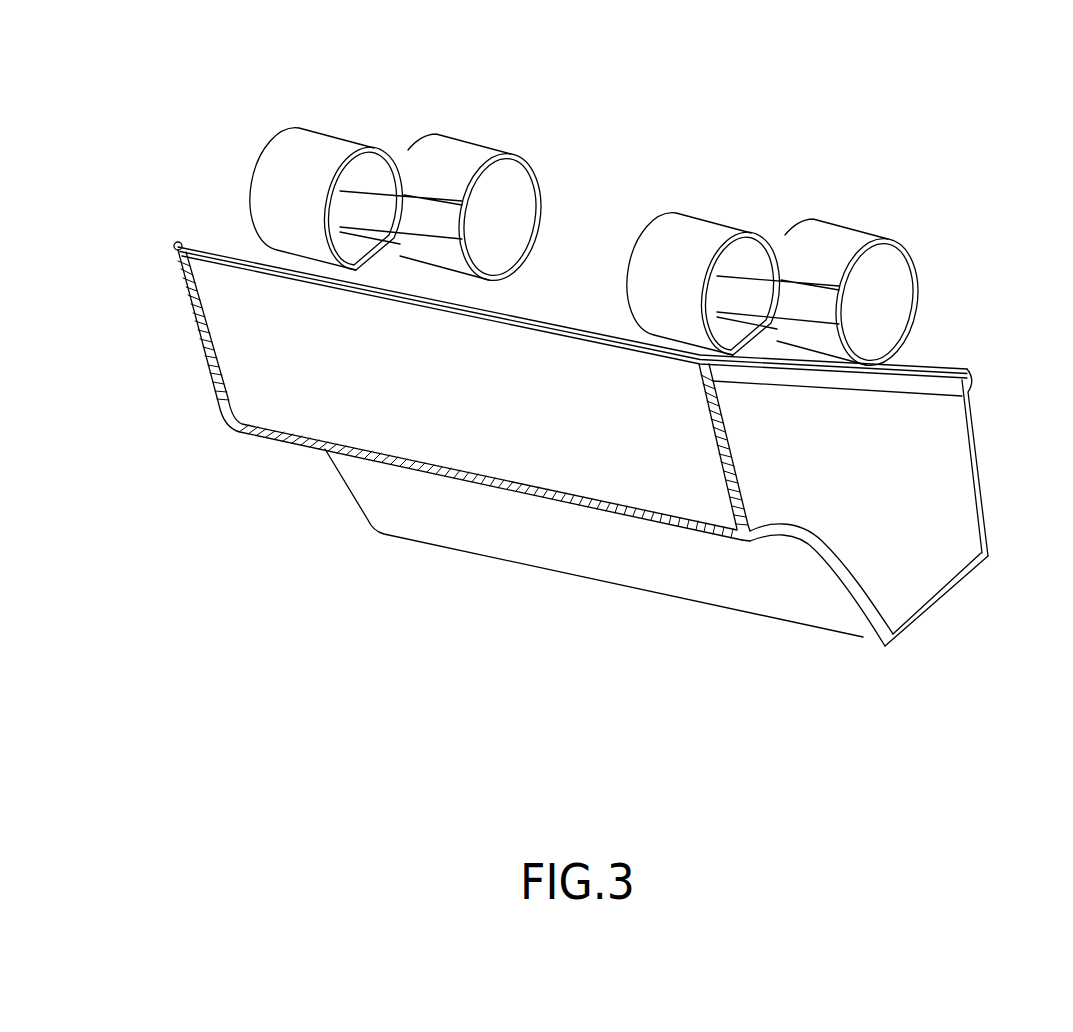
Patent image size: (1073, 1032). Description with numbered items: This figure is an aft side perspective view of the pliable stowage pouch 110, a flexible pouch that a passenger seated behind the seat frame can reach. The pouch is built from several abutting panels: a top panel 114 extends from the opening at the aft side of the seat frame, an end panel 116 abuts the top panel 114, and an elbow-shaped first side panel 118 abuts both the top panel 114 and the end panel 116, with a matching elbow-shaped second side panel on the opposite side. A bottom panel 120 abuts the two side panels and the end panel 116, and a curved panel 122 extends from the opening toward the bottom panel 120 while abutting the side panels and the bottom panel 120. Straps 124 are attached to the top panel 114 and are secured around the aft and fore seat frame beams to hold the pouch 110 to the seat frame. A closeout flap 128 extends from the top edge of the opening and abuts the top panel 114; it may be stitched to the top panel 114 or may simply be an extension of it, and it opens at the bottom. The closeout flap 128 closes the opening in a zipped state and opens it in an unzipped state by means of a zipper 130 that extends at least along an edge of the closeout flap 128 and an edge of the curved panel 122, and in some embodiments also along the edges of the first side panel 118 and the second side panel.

The pliable stowage pouch 110 is at (272, 82).
The top panel 114 is at (560, 300).
The end panel 116 is at (975, 465).
The first side panel 118 is at (953, 510).
The bottom panel 120 is at (940, 598).
The curved panel 122 is at (810, 603).
The straps 124 is at (466, 156).
The closeout flap 128 is at (298, 403).
The zipper 130 is at (587, 502).